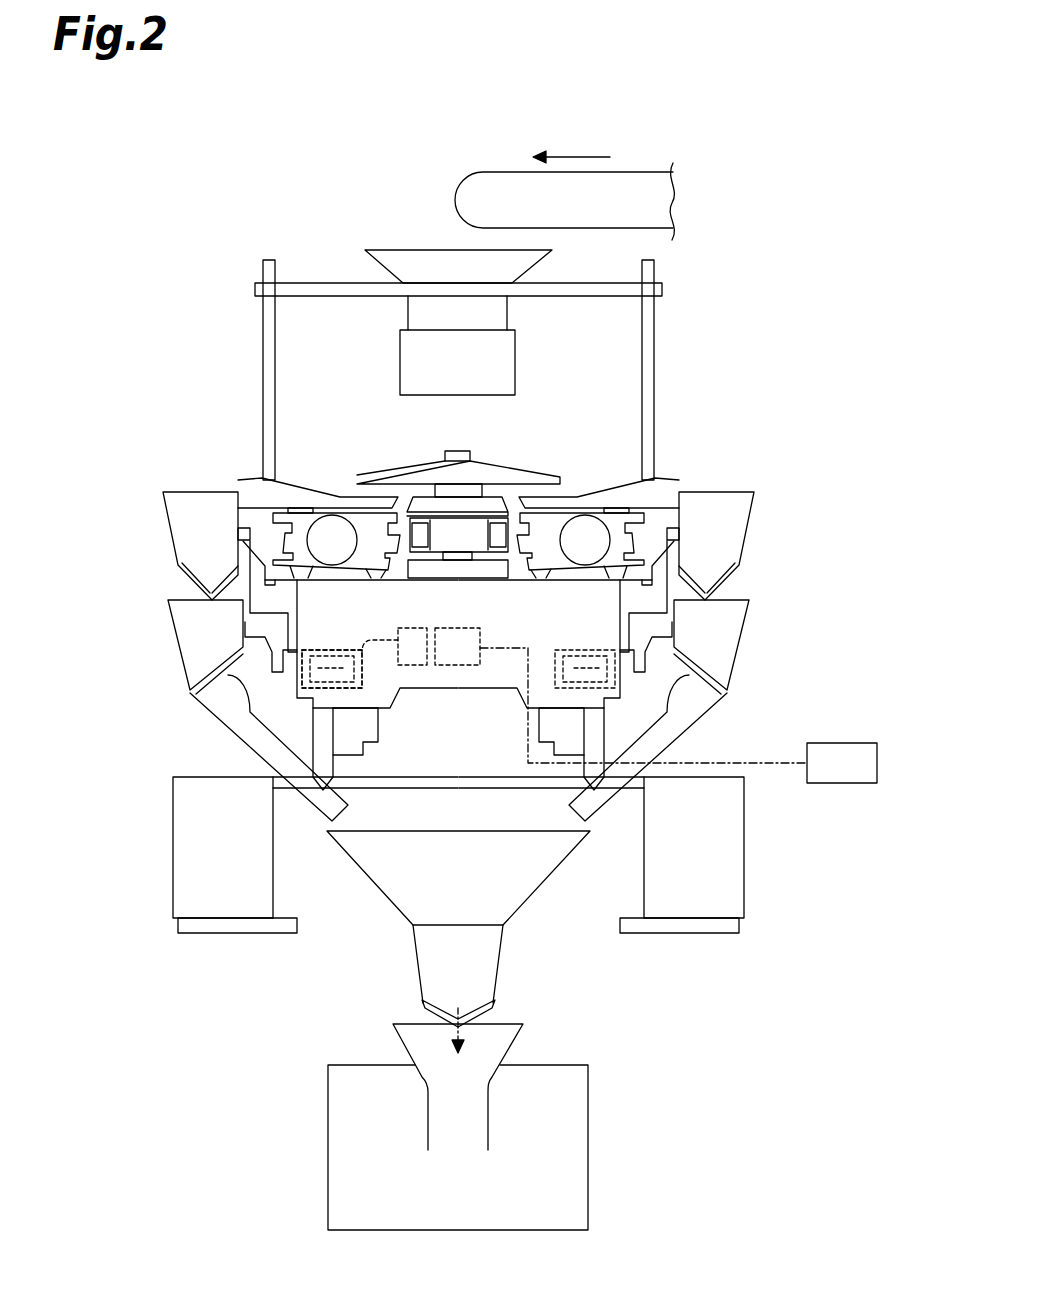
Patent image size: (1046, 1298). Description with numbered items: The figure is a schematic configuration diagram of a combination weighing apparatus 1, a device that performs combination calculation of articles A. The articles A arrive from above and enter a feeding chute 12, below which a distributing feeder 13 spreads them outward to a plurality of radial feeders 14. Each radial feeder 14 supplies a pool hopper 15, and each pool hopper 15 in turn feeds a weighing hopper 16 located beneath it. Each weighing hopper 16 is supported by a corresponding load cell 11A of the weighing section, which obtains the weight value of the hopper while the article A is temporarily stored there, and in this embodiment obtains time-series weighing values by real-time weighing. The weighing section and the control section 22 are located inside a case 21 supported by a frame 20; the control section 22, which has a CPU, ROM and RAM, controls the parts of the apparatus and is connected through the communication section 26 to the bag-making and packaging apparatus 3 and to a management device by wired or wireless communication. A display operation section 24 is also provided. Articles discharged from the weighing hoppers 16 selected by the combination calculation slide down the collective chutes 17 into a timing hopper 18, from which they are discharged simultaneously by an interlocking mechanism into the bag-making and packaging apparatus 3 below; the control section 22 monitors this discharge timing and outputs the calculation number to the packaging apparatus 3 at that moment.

The combination weighing apparatus 1 is at (204, 156).
The articles A is at (440, 230).
The bag-making and packaging apparatus 3 is at (575, 1132).
The load cell 11A is at (372, 640).
The feeding chute 12 is at (402, 258).
The distributing feeder 13 is at (512, 476).
The radial feeder 14 is at (245, 493).
The pool hopper 15 is at (178, 529).
The weighing hopper 16 is at (190, 637).
The collective chute 17 is at (242, 735).
The timing hopper 18 is at (483, 973).
The frame 20 is at (730, 833).
The case 21 is at (475, 678).
The control section 22 is at (450, 667).
The display operation section 24 is at (878, 764).
The communication section 26 is at (397, 624).